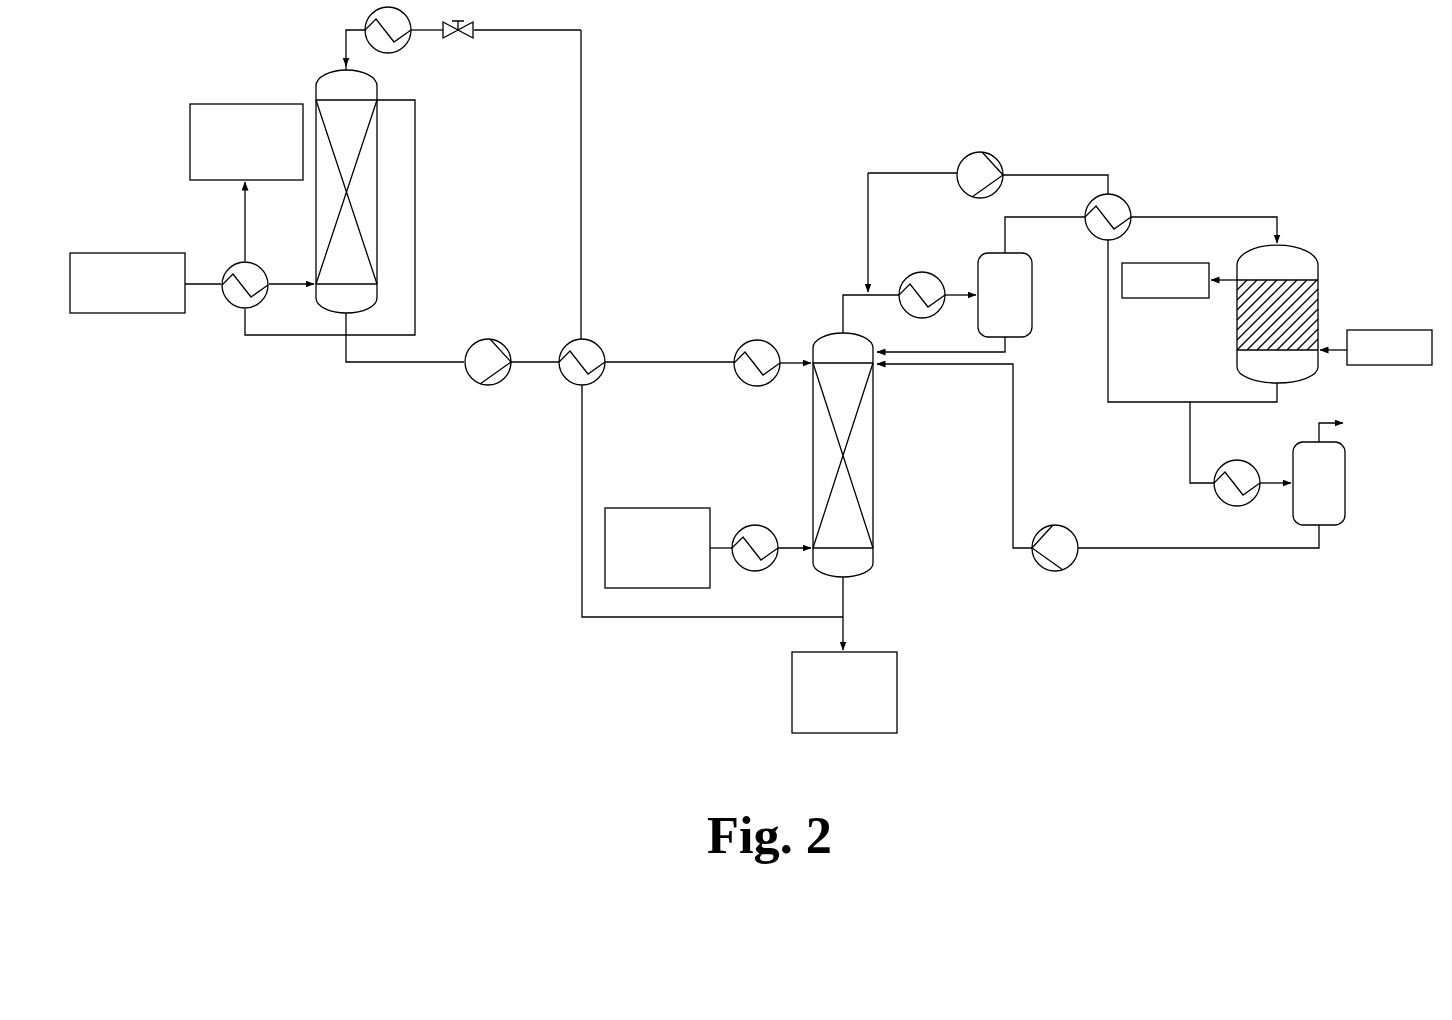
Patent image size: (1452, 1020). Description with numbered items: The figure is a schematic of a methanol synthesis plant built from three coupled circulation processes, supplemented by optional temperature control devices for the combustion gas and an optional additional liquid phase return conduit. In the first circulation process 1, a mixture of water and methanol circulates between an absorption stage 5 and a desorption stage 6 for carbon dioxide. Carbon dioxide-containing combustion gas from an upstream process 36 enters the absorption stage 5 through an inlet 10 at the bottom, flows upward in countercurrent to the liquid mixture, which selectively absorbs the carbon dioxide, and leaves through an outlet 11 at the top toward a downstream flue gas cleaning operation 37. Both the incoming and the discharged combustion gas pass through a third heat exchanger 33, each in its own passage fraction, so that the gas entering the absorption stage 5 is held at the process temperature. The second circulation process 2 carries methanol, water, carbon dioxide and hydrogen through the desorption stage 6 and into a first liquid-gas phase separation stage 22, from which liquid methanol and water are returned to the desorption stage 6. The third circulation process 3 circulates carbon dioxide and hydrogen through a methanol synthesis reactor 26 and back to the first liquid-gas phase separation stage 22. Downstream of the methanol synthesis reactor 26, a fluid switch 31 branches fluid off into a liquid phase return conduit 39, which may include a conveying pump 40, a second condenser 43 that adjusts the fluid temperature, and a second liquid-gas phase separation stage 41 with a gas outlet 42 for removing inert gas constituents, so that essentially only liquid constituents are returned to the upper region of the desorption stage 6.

The first circulation process 1 is at (616, 218).
The second circulation process 2 is at (828, 292).
The third circulation process 3 is at (1304, 212).
The absorption stage 5 is at (363, 188).
The desorption stage 6 is at (857, 452).
The inlet 10 is at (300, 286).
The outlet 11 is at (378, 99).
The first liquid-gas phase separation stage 22 is at (990, 309).
The methanol synthesis reactor 26 is at (1312, 300).
The fluid switch 31 is at (1188, 405).
The third heat exchanger 33 is at (237, 297).
The process 36 is at (112, 299).
The flue gas cleaning operation 37 is at (231, 155).
The liquid phase return conduit 39 is at (1170, 550).
The conveying pump 40 is at (1056, 557).
The second liquid-gas phase separation stage 41 is at (1304, 497).
The gas outlet 42 is at (1327, 424).
The second condenser 43 is at (1245, 478).